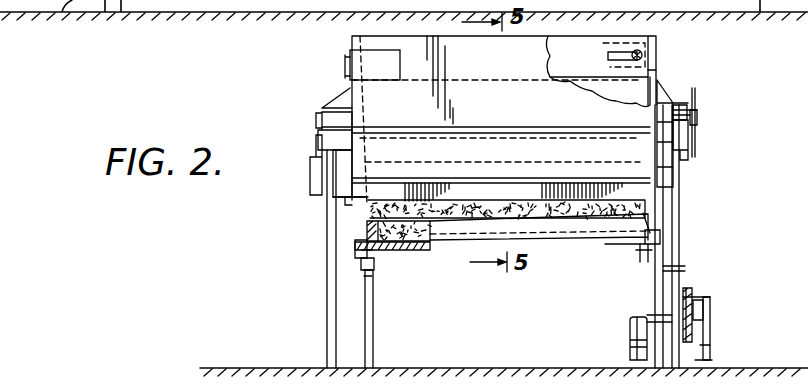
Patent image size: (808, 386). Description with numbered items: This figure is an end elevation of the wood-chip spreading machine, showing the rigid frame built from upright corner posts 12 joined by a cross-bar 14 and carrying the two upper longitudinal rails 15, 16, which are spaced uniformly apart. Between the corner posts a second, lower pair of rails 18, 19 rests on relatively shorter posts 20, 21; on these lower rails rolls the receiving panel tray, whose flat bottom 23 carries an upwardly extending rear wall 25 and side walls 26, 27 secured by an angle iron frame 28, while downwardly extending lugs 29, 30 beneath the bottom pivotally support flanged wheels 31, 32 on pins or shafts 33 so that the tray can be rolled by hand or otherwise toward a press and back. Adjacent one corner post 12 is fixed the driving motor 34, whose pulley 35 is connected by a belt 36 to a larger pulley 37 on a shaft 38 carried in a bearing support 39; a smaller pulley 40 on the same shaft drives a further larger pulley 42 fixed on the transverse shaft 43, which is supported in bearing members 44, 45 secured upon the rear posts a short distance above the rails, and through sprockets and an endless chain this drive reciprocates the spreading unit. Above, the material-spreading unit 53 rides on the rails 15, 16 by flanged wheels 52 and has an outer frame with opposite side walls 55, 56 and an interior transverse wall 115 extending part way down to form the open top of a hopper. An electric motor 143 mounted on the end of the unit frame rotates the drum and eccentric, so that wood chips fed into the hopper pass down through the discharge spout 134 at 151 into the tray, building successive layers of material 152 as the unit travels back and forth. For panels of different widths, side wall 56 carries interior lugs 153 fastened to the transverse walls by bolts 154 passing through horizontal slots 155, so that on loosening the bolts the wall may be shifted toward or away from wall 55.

The upright frame post 12 is at (326, 324).
The cross-bar 14 is at (330, 198).
The longitudinal rail 15 is at (310, 166).
The longitudinal rail 16 is at (680, 157).
The lower rail 18 is at (373, 278).
The lower rail 19 is at (648, 285).
The shorter post 20 is at (374, 330).
The shorter post 21 is at (652, 300).
The flat bottom 23 is at (438, 246).
The rear wall 25 is at (573, 242).
The side wall 26 is at (648, 223).
The side wall 27 is at (352, 244).
The angle iron frame 28 is at (357, 258).
The downwardly extending lug 29 is at (360, 262).
The downwardly extending lug 30 is at (658, 243).
The flanged wheel 31 is at (358, 287).
The flanged wheel 32 is at (683, 268).
The pin or shaft 33 is at (375, 266).
The driving motor 34 is at (628, 332).
The pulley 35 is at (698, 335).
The belt 36 is at (693, 318).
The pulley 37 is at (698, 294).
The shaft 38 is at (700, 308).
The bearing support 39 is at (702, 346).
The pulley 40 is at (690, 297).
The pulley 42 is at (695, 98).
The transverse shaft 43 is at (698, 113).
The bearing member 44 is at (322, 108).
The bearing member 45 is at (674, 102).
The flanged wheel 52 is at (314, 137).
The material-spreading unit 53 is at (652, 42).
The side wall 55 is at (350, 52).
The side wall 56 is at (656, 74).
The interior transverse wall 115 is at (610, 30).
The discharge spout 134 is at (355, 209).
The electric motor 143 is at (372, 62).
The discharge point 151 is at (638, 207).
The layers of material 152 is at (427, 227).
The lug 153 is at (598, 71).
The screw or bolt 154 is at (641, 65).
The horizontal slot 155 is at (622, 73).